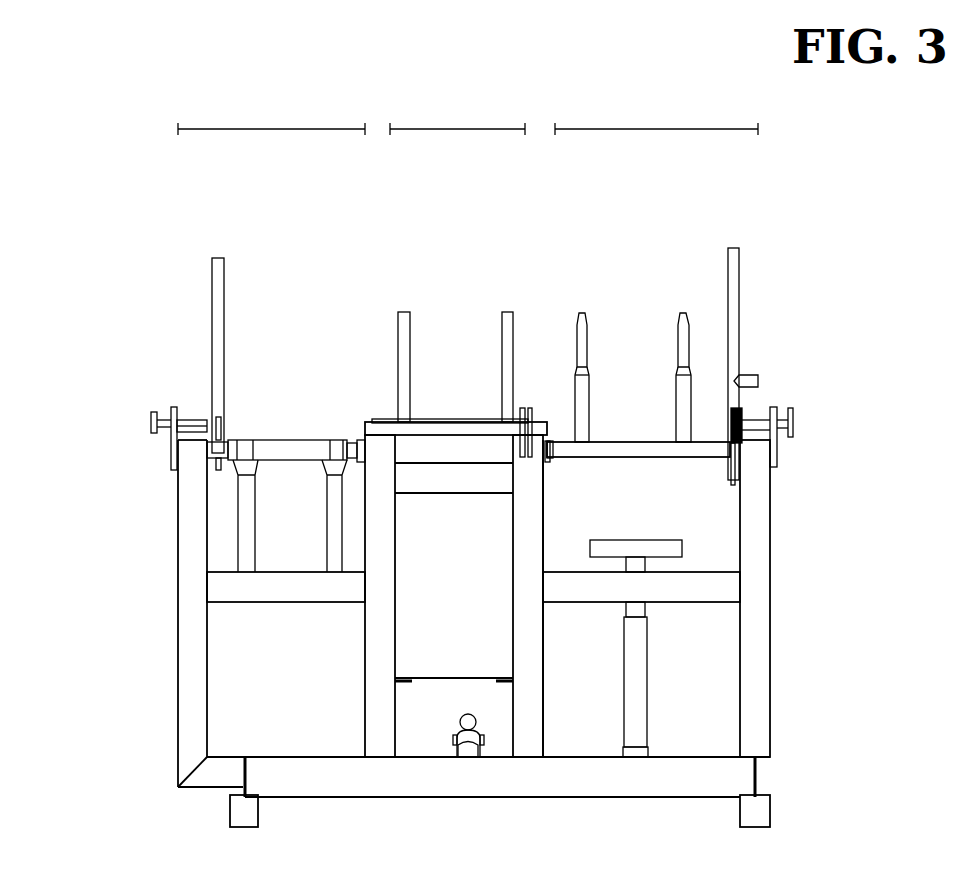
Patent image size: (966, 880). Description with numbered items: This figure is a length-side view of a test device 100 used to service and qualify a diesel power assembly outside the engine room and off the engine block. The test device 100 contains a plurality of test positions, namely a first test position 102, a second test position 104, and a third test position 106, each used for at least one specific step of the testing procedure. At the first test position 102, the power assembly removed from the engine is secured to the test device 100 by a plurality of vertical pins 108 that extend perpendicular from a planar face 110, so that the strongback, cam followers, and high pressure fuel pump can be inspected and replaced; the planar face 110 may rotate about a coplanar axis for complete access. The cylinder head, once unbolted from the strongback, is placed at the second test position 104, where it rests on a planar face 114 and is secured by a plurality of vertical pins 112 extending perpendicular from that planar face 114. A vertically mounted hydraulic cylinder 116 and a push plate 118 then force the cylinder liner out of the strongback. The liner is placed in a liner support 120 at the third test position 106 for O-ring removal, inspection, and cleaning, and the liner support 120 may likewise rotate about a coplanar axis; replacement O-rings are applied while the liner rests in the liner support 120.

The test device 100 is at (572, 840).
The first test position 102 is at (647, 129).
The second test position 104 is at (443, 129).
The third test position 106 is at (252, 129).
The vertical pins 108 is at (683, 312).
The planar face 110 is at (625, 440).
The vertical pins 112 is at (505, 311).
The planar face 114 is at (450, 420).
The hydraulic cylinder 116 is at (633, 667).
The push plate 118 is at (607, 540).
The liner support 120 is at (303, 438).